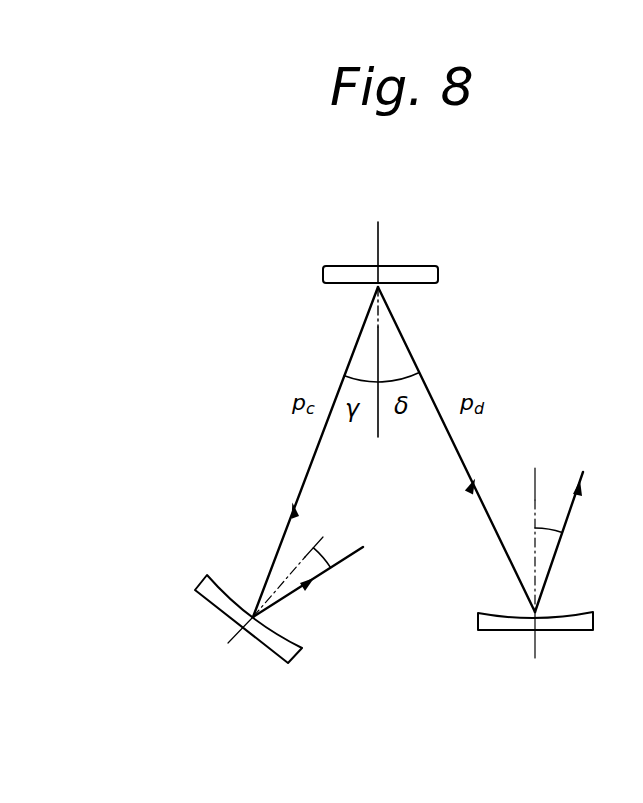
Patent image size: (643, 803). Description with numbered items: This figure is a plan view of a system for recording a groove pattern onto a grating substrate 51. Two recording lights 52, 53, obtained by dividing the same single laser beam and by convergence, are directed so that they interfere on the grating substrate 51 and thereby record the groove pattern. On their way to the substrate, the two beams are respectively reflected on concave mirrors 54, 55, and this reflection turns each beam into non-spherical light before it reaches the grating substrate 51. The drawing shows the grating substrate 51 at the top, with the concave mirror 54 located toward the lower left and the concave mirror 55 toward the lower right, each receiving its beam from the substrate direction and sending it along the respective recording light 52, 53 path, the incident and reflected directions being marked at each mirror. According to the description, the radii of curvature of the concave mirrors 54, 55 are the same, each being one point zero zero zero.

The grating substrate 51 is at (418, 265).
The recording light 52 is at (363, 547).
The recording light 53 is at (583, 472).
The concave mirror 54 is at (220, 610).
The concave mirror 55 is at (492, 628).